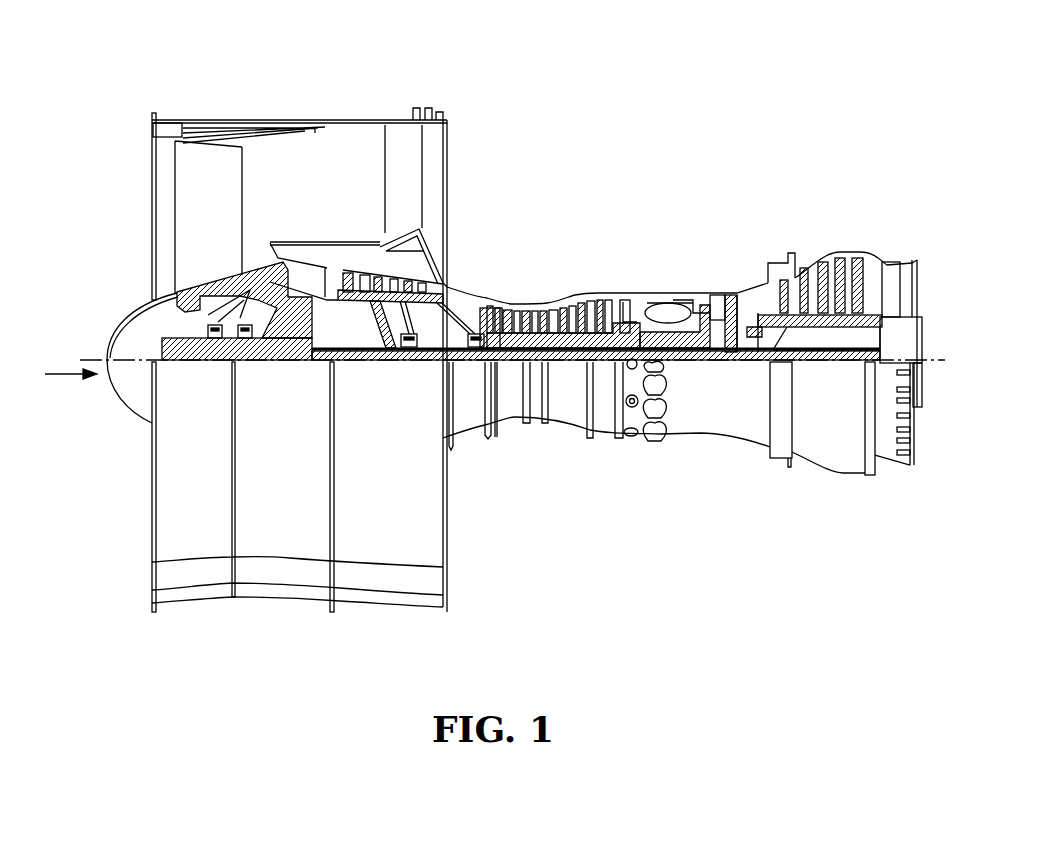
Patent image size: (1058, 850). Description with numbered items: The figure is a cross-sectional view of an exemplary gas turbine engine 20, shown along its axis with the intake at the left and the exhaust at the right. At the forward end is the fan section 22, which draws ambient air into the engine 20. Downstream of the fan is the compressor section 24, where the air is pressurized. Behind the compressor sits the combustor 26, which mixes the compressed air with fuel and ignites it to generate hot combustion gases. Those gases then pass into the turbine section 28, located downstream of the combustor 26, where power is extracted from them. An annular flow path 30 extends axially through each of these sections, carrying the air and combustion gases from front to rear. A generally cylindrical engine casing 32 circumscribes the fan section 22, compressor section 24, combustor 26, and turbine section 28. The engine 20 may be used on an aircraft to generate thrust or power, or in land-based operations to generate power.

The gas turbine engine 20 is at (725, 147).
The fan section 22 is at (320, 87).
The compressor section 24 is at (485, 280).
The combustor 26 is at (711, 273).
The turbine section 28 is at (873, 237).
The annular flow path 30 is at (62, 380).
The engine casing 32 is at (707, 413).